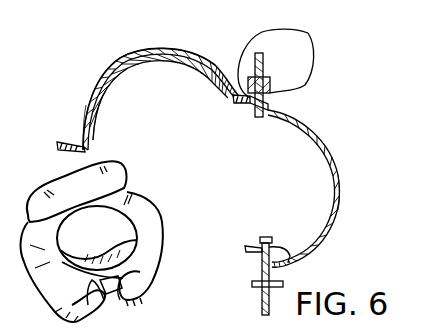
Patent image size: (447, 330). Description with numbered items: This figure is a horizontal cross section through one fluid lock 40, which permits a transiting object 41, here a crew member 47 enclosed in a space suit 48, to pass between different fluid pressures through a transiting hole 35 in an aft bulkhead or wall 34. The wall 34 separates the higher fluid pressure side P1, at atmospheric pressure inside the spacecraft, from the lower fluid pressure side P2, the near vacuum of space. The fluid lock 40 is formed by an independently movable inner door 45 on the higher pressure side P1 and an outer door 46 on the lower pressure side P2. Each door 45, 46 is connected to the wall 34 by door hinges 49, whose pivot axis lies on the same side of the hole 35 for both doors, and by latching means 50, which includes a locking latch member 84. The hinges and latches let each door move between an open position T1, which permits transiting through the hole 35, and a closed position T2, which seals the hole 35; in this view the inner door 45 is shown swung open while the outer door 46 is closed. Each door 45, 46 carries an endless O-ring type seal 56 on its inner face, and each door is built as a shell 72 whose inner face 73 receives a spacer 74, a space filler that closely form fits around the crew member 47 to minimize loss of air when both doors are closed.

The aft bulkhead or wall 34 is at (265, 60).
The transiting hole 35 is at (254, 117).
The fluid lock 40 is at (207, 57).
The transiting object 41 is at (152, 241).
The inner door 45 is at (143, 50).
The outer door 46 is at (305, 124).
The crew member 47 is at (152, 241).
The space suit 48 is at (160, 206).
The door hinge 49 is at (313, 61).
The latching means 50 is at (275, 261).
The O-ring type seal 56 is at (88, 148).
The door shell 72 is at (122, 57).
The inner face of door shell 73 is at (143, 66).
The spacer 74 is at (108, 78).
The locking latch member 84 is at (246, 247).
The open position T1 is at (80, 118).
The closed position T2 is at (338, 152).
The higher fluid pressure side P1 is at (362, 243).
The lower fluid pressure side P2 is at (253, 293).